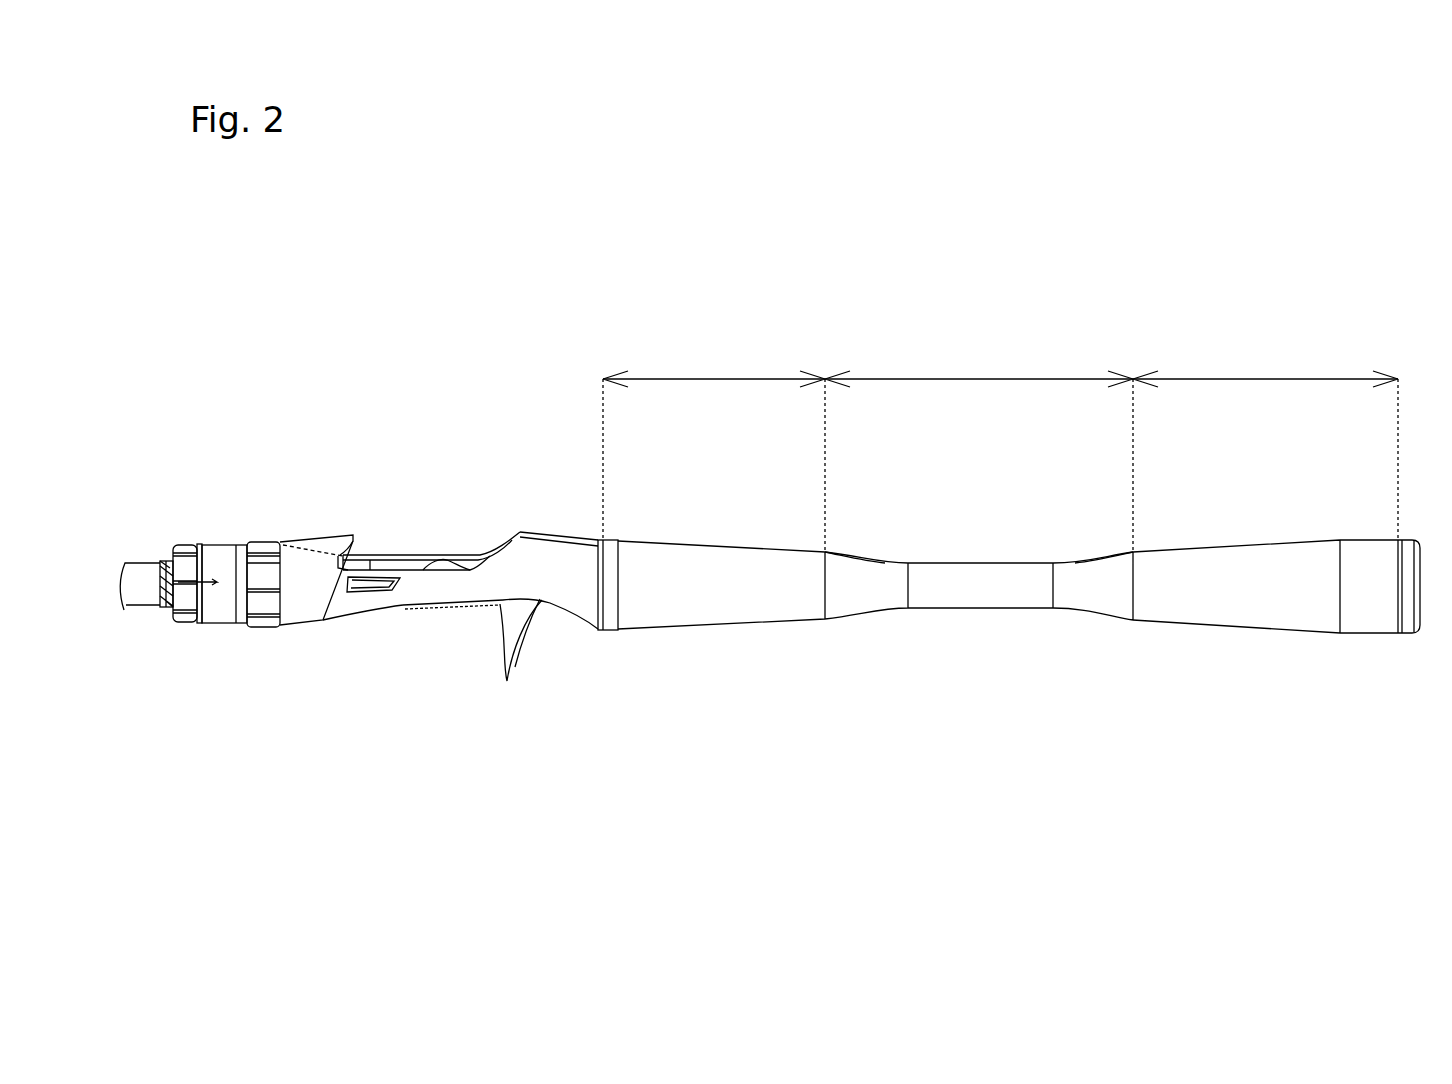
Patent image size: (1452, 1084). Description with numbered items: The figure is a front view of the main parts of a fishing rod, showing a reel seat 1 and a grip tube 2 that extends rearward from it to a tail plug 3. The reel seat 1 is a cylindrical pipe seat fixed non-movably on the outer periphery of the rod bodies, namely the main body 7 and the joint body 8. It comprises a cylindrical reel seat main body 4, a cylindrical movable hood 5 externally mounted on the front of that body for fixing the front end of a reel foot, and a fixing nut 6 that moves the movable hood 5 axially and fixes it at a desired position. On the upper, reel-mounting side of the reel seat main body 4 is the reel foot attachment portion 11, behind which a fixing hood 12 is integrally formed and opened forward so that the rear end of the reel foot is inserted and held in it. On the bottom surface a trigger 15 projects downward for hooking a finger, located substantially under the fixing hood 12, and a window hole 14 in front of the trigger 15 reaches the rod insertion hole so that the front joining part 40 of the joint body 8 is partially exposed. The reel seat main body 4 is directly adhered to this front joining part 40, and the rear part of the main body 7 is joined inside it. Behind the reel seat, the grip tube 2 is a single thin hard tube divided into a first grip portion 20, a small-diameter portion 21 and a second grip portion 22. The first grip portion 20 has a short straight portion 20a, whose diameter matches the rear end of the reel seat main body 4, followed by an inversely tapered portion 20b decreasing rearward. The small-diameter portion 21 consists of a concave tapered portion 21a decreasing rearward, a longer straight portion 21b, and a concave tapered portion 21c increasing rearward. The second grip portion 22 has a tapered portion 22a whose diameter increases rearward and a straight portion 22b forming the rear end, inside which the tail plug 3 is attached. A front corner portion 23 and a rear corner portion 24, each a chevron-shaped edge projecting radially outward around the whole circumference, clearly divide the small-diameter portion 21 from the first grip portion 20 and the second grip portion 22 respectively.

The reel seat 1 is at (448, 385).
The grip tube 2 is at (1103, 308).
The tail plug 3 is at (1420, 587).
The reel seat main body 4 is at (365, 625).
The movable hood 5 is at (315, 533).
The fixing nut 6 is at (217, 545).
The main body 7 is at (133, 557).
The joint body 8 is at (416, 563).
The reel foot attachment portion 11 is at (458, 537).
The fixing hood 12 is at (538, 527).
The window hole 14 is at (440, 610).
The trigger 15 is at (520, 672).
The first grip portion 20 is at (715, 379).
The straight portion 20a is at (607, 640).
The tapered portion 20b is at (752, 625).
The small-diameter portion 21 is at (980, 379).
The tapered portion 21a is at (862, 620).
The straight portion 21b is at (972, 614).
The tapered portion 21c is at (1094, 616).
The second grip portion 22 is at (1275, 379).
The tapered portion 22a is at (1237, 628).
The straight portion 22b is at (1370, 636).
The front corner portion 23 is at (830, 577).
The rear corner portion 24 is at (1130, 577).
The front joining part 40 is at (463, 612).